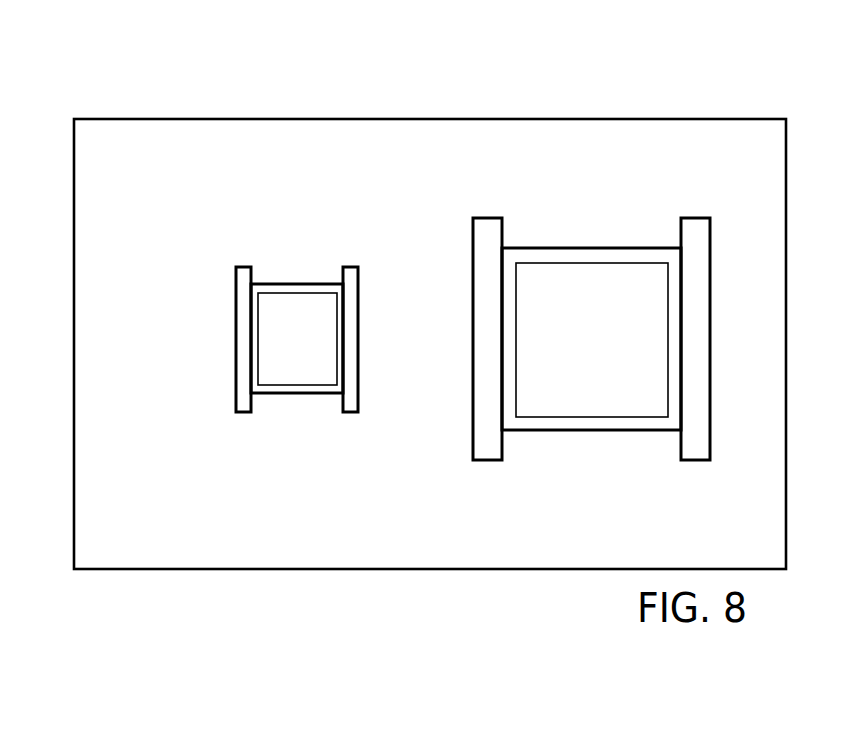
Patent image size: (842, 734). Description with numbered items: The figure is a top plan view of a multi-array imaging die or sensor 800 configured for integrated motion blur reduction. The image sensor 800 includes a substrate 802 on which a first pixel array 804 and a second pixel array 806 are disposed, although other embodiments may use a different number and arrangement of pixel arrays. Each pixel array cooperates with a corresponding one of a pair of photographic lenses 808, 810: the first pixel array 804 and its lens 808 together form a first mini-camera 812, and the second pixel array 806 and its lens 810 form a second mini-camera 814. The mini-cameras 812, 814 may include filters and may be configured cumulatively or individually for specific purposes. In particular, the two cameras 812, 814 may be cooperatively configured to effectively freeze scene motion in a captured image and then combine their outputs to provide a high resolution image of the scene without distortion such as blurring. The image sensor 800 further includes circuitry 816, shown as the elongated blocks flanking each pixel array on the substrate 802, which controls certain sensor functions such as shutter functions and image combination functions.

The multi-array imaging die or sensor 800 is at (613, 67).
The substrate 802 is at (325, 127).
The first pixel array 804 is at (325, 355).
The second pixel array 806 is at (620, 357).
The photographic lens 808 is at (303, 397).
The photographic lens 810 is at (563, 430).
The first mini-camera 812 is at (278, 257).
The second mini-camera 814 is at (553, 224).
The circuitry 816 is at (233, 353).